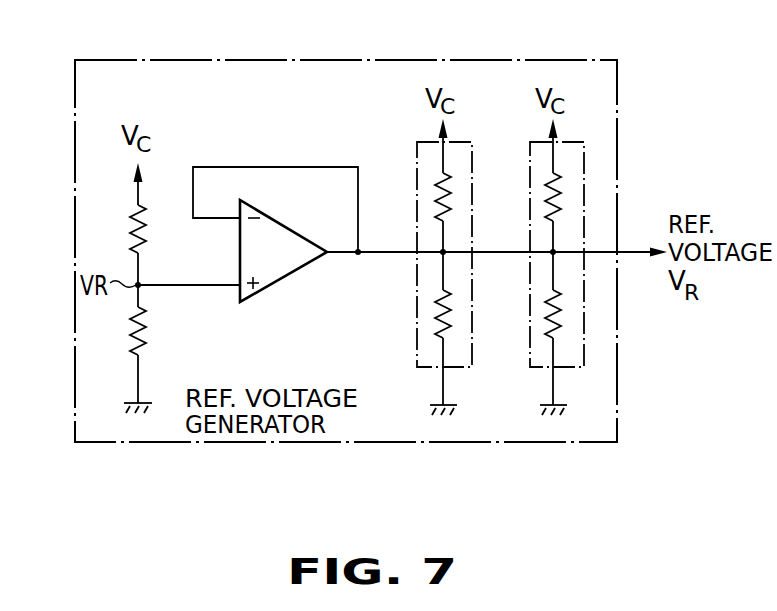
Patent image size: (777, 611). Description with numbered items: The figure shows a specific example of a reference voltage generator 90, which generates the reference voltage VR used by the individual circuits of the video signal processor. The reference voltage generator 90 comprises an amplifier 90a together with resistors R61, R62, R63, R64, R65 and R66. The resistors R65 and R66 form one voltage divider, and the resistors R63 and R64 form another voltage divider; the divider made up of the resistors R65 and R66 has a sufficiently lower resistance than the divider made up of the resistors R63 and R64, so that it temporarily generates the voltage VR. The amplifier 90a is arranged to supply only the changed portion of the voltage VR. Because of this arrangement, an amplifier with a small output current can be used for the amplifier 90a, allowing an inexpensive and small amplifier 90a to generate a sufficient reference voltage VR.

The reference voltage generator 90 is at (462, 444).
The amplifier 90a is at (287, 232).
The resistor R61 is at (146, 238).
The resistor R62 is at (146, 335).
The resistor R63 is at (455, 207).
The resistor R64 is at (455, 322).
The resistor R65 is at (565, 205).
The resistor R66 is at (565, 322).